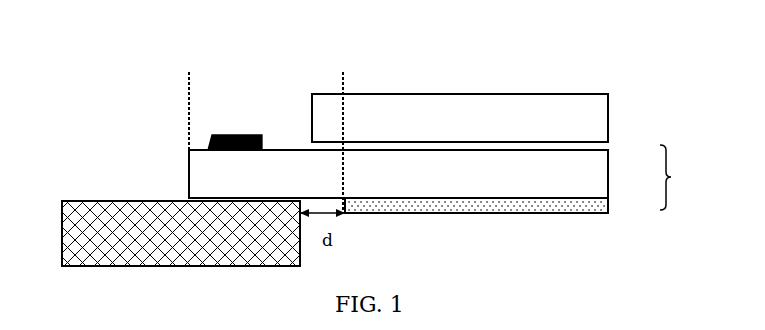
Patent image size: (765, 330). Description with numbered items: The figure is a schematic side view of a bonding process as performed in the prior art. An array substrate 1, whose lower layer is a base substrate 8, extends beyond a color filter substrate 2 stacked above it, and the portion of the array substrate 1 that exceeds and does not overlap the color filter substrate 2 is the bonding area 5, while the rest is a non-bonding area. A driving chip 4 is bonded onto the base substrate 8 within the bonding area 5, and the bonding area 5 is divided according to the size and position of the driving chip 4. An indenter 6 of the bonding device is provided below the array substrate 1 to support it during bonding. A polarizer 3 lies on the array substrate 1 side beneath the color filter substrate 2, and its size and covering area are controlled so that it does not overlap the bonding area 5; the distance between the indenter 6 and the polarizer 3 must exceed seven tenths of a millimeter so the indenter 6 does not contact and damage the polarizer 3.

The array substrate 1 is at (674, 177).
The color filter substrate 2 is at (590, 118).
The polarizer 3 is at (590, 208).
The driving chip 4 is at (217, 133).
The bonding area 5 is at (281, 96).
The indenter 6 is at (120, 215).
The base substrate 8 is at (590, 177).